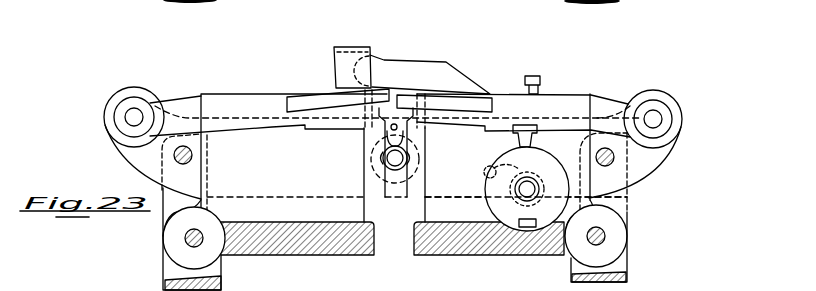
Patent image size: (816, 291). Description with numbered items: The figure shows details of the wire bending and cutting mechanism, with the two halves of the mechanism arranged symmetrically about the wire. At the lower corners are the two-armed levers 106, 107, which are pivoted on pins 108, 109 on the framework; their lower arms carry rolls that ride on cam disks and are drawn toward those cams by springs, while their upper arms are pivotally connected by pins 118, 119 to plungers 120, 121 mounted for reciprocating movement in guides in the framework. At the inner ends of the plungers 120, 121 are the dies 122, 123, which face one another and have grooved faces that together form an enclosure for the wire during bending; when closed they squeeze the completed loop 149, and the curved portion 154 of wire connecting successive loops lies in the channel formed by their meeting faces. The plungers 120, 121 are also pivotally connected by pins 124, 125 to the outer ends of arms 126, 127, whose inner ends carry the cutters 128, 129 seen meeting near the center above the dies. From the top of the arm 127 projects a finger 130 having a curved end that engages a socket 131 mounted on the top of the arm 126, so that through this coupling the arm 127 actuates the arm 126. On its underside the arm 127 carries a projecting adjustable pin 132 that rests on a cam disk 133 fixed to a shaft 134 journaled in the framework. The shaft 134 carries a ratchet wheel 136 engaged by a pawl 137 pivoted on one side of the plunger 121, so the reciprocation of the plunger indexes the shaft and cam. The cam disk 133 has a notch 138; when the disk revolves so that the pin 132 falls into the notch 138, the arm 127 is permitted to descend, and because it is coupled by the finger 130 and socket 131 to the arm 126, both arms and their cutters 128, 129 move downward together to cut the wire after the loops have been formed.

The two-armed lever 106 is at (175, 273).
The two-armed lever 107 is at (616, 266).
The pin 108 is at (186, 242).
The pin 109 is at (606, 236).
The pin 118 is at (180, 160).
The pin 119 is at (616, 158).
The plunger 120 is at (120, 137).
The plunger 121 is at (662, 142).
The die 122 is at (380, 198).
The die 123 is at (416, 192).
The pin 124 is at (130, 116).
The pin 125 is at (655, 117).
The arm 126 is at (242, 108).
The arm 127 is at (606, 110).
The cutter 128 is at (302, 103).
The cutter 129 is at (465, 103).
The finger 130 is at (409, 70).
The socket 131 is at (349, 56).
The adjustable pin 132 is at (545, 127).
The cam disk 133 is at (502, 200).
The shaft 134 is at (529, 214).
The ratchet wheel 136 is at (527, 205).
The pawl 137 is at (485, 177).
The notch 138 is at (519, 221).
The completed loop 149 is at (390, 165).
The curved portion 154 is at (386, 148).